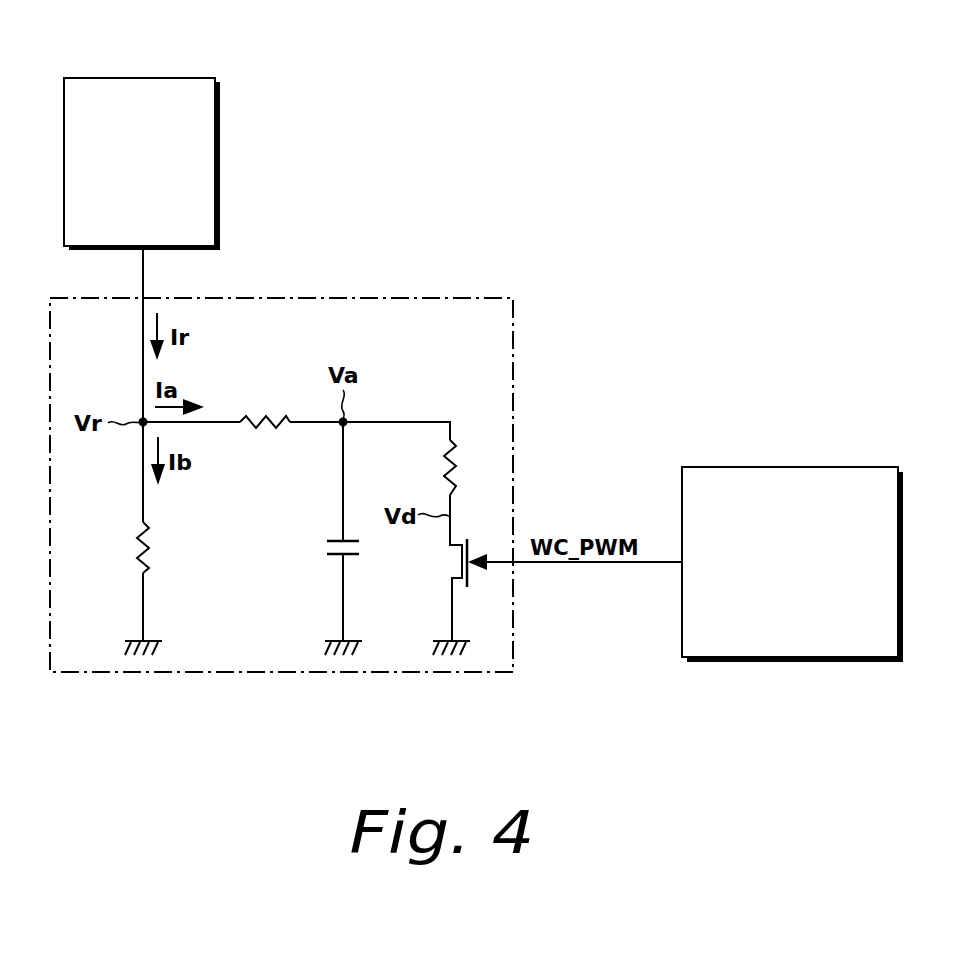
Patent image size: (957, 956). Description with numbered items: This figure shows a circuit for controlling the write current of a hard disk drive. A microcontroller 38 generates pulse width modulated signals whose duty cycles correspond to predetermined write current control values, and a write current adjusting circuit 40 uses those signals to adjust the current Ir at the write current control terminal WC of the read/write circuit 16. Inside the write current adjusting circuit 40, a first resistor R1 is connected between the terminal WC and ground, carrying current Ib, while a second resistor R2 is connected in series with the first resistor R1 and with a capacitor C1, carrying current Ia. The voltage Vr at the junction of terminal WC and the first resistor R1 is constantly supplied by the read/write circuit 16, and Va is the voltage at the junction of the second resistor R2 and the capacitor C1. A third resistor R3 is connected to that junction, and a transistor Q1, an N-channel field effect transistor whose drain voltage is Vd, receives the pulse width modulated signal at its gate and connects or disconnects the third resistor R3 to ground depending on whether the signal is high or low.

The read/write circuit 16 is at (140, 78).
The microcontroller 38 is at (788, 467).
The write current adjusting circuit 40 is at (432, 298).
The first resistor R1 is at (163, 547).
The second resistor R2 is at (265, 407).
The third resistor R3 is at (470, 467).
The capacitor C1 is at (324, 549).
The transistor Q1 is at (453, 563).